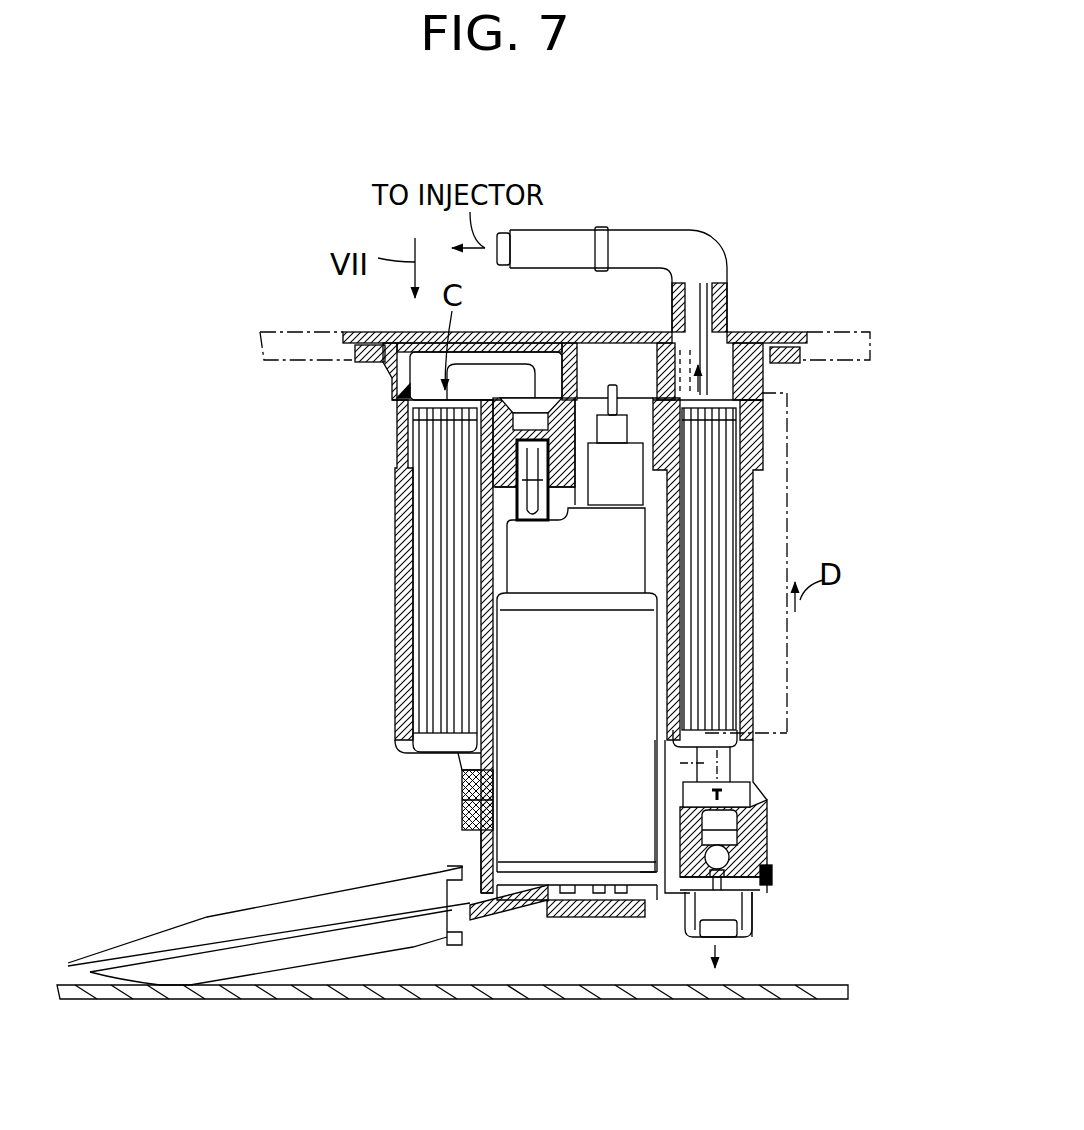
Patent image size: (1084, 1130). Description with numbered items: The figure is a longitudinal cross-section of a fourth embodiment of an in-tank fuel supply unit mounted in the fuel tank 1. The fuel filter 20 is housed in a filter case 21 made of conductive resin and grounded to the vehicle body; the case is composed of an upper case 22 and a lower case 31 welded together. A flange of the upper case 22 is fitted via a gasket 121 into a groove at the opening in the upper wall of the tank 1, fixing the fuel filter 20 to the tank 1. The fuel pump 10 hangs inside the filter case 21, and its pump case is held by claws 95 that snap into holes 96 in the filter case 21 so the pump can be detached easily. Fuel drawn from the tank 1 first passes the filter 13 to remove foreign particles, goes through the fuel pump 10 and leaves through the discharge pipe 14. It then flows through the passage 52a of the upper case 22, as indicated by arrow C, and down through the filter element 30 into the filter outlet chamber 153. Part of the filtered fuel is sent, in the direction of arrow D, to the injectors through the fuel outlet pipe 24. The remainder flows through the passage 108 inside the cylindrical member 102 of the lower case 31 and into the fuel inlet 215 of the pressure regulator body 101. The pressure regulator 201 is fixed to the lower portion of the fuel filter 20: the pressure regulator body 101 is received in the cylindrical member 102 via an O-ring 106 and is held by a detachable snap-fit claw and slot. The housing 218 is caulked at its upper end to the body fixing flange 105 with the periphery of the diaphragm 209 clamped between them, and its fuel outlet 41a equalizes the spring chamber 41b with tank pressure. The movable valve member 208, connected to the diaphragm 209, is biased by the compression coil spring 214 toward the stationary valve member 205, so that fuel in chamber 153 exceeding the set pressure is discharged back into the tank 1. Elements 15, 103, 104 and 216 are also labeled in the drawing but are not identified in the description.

The fuel tank 1 is at (832, 340).
The fuel outlet pipe 24 is at (645, 245).
The filter case 21 is at (378, 448).
The gasket 121 is at (790, 348).
The passage 52a is at (535, 352).
The upper case 22 is at (397, 390).
The pump discharge connector 15 is at (622, 418).
The discharge pipe 14 is at (518, 507).
The fuel filter 20 is at (395, 523).
The lower case 31 is at (405, 708).
The filter element 30 is at (438, 628).
The filter outlet chamber 153 is at (423, 742).
The holes 96 is at (465, 793).
The claws 95 is at (463, 805).
The fuel pump 10 is at (632, 665).
The passage 108 is at (738, 778).
The fuel inlet 215 is at (755, 795).
The O-ring 106 is at (748, 805).
The cylindrical member 102 is at (757, 818).
The pressure regulator body 101 is at (765, 825).
The valve spring chamber 103 is at (772, 835).
The valve ball 104 is at (755, 852).
The stationary valve member 205 is at (730, 858).
The body fixing flange 105 is at (775, 880).
The spring chamber 41b is at (680, 905).
The compression coil spring 214 is at (655, 893).
The pressure regulator 201 is at (762, 920).
The outlet inner wall 216 is at (700, 917).
The housing 218 is at (752, 945).
The fuel outlet 41a is at (752, 925).
The movable valve member 208 is at (585, 900).
The diaphragm 209 is at (615, 900).
The filter 13 is at (187, 933).